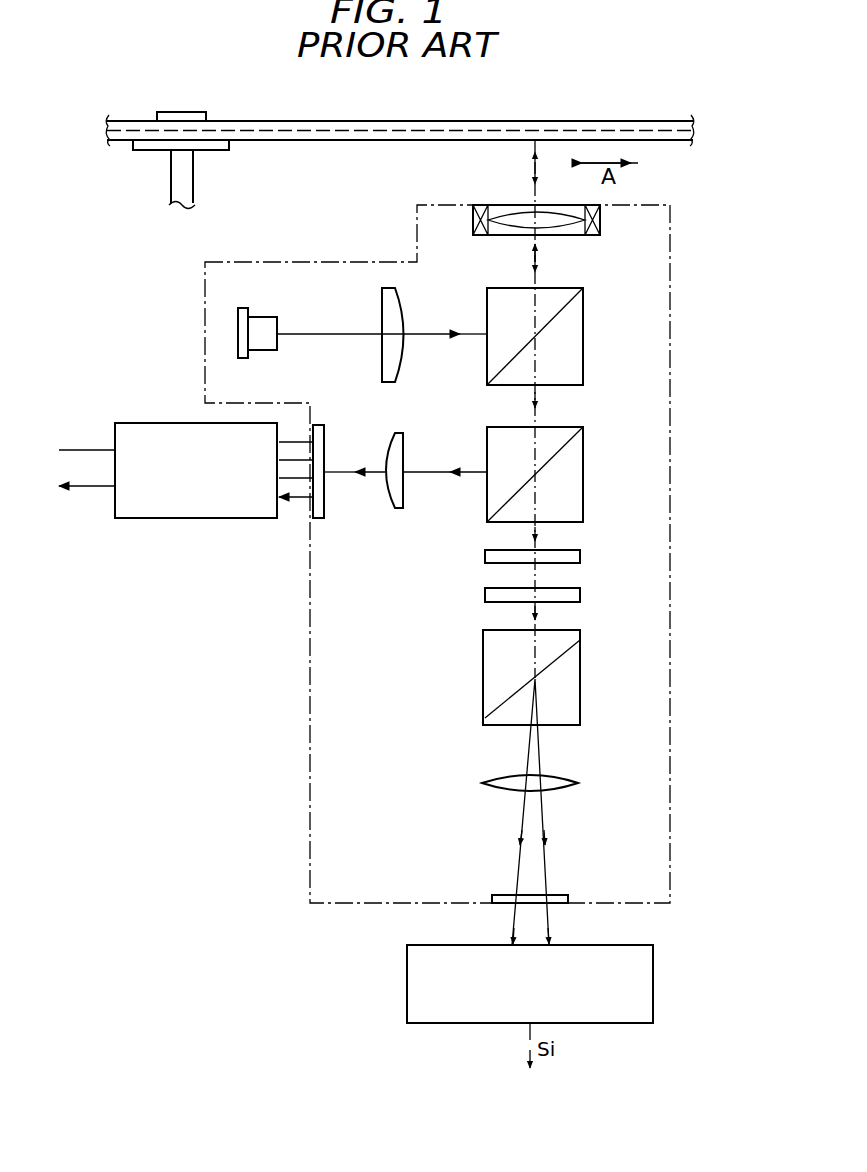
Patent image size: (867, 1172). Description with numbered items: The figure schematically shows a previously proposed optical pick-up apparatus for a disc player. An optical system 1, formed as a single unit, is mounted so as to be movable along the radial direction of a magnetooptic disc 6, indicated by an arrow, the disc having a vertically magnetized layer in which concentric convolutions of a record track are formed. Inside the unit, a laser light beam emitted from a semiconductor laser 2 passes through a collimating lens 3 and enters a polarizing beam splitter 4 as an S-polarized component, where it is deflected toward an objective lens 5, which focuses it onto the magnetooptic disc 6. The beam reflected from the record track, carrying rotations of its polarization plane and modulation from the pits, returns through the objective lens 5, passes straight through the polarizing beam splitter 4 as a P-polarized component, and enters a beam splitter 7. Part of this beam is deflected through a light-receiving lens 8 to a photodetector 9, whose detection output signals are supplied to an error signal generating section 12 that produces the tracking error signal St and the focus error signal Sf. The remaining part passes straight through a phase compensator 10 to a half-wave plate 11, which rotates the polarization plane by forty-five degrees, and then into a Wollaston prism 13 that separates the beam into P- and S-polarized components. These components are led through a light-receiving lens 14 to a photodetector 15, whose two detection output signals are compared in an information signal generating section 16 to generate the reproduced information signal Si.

The optical system 1 is at (308, 765).
The semiconductor laser 2 is at (258, 316).
The collimating lens 3 is at (405, 300).
The polarizing beam splitter 4 is at (583, 337).
The objective lens 5 is at (556, 232).
The magnetooptic disc 6 is at (612, 124).
The beam splitter 7 is at (583, 472).
The light-receiving lens 8 is at (405, 452).
The photodetector 9 is at (325, 452).
The phase compensator 10 is at (580, 556).
The half-wave plate 11 is at (580, 595).
The error signal generating section 12 is at (165, 423).
The Wollaston prism 13 is at (580, 678).
The light-receiving lens 14 is at (578, 785).
The photodetector 15 is at (572, 900).
The information signal generating section 16 is at (653, 972).